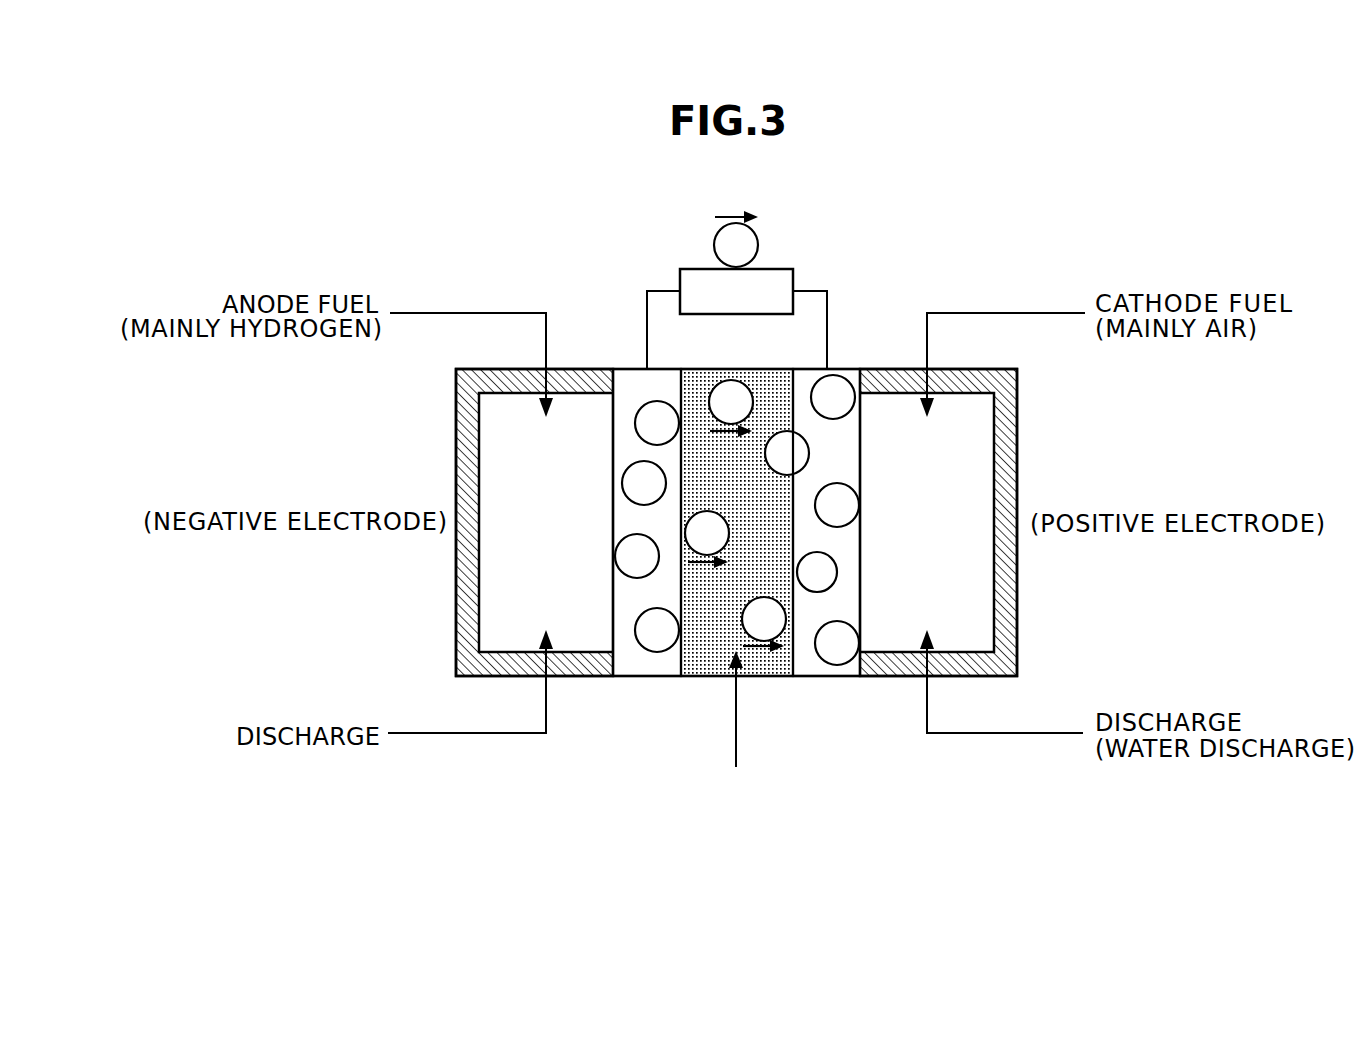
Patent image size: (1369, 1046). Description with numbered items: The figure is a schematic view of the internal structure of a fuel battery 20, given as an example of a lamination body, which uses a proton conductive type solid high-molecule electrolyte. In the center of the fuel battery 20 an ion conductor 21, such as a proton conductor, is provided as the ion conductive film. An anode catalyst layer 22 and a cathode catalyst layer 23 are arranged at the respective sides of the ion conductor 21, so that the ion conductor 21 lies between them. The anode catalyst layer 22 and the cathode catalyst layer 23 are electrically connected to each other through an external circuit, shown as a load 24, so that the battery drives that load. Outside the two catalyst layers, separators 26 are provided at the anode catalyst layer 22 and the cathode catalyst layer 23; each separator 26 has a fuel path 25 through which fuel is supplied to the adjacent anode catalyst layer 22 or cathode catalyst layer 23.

The fuel battery 20 is at (906, 281).
The ion conductor 21 is at (717, 679).
The anode catalyst layer 22 is at (657, 679).
The cathode catalyst layer 23 is at (826, 679).
The external circuit (load) 24 is at (680, 278).
The fuel path 25 is at (500, 425).
The separator 26 is at (470, 598).